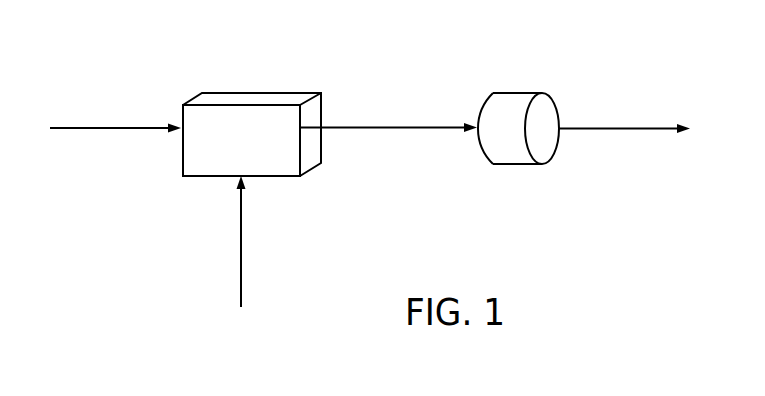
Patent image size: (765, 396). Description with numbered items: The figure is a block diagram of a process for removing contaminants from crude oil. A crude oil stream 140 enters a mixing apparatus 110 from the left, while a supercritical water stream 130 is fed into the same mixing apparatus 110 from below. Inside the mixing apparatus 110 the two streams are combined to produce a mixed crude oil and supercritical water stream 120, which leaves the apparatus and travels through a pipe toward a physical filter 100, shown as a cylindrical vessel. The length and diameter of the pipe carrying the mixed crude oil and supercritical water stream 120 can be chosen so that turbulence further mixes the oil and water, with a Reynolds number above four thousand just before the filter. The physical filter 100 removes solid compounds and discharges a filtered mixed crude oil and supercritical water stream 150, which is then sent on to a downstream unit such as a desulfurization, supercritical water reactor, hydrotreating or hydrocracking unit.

The physical filter 100 is at (507, 93).
The mixing apparatus 110 is at (235, 93).
The mixed crude oil and supercritical water stream 120 is at (372, 127).
The supercritical water stream 130 is at (240, 235).
The crude oil stream 140 is at (93, 127).
The filtered mixed crude oil and supercritical water stream 150 is at (637, 128).